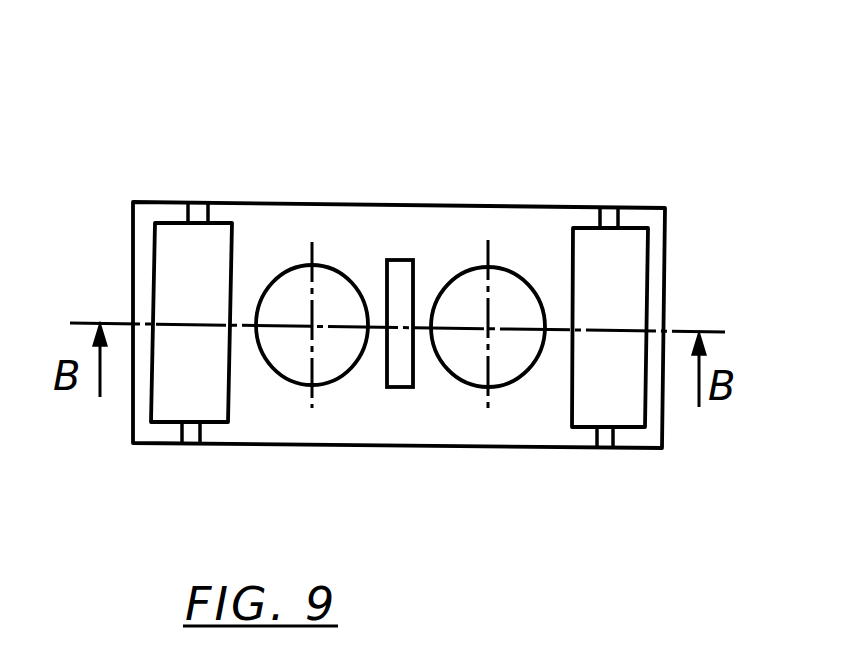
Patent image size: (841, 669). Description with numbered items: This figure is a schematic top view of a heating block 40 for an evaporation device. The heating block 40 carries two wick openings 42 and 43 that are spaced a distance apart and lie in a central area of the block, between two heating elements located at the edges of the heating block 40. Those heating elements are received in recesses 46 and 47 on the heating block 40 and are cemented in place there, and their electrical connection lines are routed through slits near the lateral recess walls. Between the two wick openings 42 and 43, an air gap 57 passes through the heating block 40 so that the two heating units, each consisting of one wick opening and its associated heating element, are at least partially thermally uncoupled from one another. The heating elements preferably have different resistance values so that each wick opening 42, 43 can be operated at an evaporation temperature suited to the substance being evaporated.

The heating block 40 is at (426, 178).
The wick opening 42 is at (508, 308).
The wick opening 43 is at (297, 302).
The recess 46 is at (182, 385).
The recess 47 is at (620, 402).
The air gap 57 is at (398, 367).